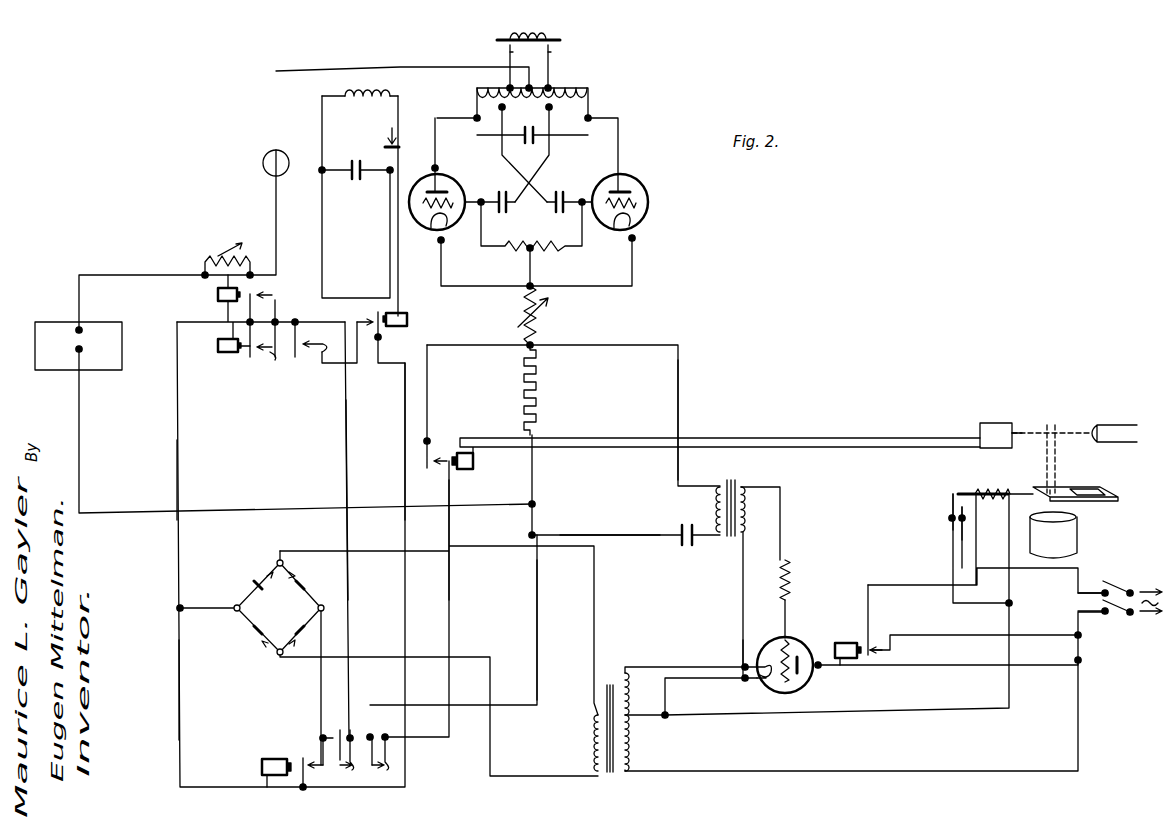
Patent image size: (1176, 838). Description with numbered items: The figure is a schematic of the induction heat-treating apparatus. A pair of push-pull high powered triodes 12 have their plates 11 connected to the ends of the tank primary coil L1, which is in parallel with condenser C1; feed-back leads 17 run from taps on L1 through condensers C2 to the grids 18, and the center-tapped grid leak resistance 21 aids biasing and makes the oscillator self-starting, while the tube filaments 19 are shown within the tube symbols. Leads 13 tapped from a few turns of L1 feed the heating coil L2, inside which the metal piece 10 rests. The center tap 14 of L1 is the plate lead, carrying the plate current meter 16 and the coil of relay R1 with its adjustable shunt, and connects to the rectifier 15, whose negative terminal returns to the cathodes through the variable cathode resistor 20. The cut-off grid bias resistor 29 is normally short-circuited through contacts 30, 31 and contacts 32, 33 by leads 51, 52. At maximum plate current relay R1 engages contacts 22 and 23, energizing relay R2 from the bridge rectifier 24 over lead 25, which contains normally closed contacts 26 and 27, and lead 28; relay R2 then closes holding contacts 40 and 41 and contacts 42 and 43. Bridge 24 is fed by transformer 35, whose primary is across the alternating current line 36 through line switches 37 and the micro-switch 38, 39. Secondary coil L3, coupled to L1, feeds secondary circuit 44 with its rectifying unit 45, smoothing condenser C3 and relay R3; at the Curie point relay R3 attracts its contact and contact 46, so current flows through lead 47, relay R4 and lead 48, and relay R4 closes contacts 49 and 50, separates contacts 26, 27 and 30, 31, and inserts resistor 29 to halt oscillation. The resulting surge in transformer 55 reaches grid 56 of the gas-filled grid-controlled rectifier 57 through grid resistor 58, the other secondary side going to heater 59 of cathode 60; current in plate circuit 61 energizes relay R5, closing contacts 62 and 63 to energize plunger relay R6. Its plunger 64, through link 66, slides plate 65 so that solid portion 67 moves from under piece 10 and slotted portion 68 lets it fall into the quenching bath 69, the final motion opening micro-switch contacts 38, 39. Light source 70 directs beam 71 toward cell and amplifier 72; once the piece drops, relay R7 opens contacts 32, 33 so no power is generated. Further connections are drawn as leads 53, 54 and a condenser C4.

The metal piece 10 is at (510, 40).
The plates 11 is at (430, 181).
The high powered triodes 12 is at (449, 189).
The leads 13 is at (508, 53).
The center tap 14 is at (401, 67).
The rectifier 15 is at (46, 322).
The plate current meter 16 is at (263, 160).
The feed-back leads 17 is at (511, 158).
The grids 18 is at (640, 206).
The tube filaments 19 is at (637, 218).
The cathode resistor 20 is at (520, 313).
The grid leak resistance 21 is at (545, 251).
The contact 22 is at (248, 305).
The contact 23 is at (277, 322).
The bridge rectifier 24 is at (280, 600).
The lead 25 is at (346, 462).
The contact 26 is at (335, 736).
The contact 27 is at (353, 758).
The lead 28 is at (182, 491).
The cut-off grid bias resistor 29 is at (540, 404).
The contact 30 is at (384, 738).
The contact 31 is at (390, 762).
The contact 32 is at (430, 440).
The contact 33 is at (447, 469).
The transformer 35 is at (612, 777).
The alternating current line 36 is at (1140, 581).
The line switches 37 is at (1118, 586).
The micro-switch contact 38 is at (950, 500).
The micro-switch contact 39 is at (964, 507).
The contact 40 is at (245, 351).
The contact 41 is at (272, 354).
The contact 42 is at (293, 355).
The contact 43 is at (313, 338).
The secondary circuit 44 is at (386, 147).
The rectifying unit 45 is at (357, 320).
The contact 46 is at (381, 339).
The lead 47 is at (403, 432).
The lead 48 is at (178, 685).
The contact 49 is at (316, 772).
The contact 50 is at (322, 755).
The lead 51 is at (452, 546).
The lead 52 is at (537, 636).
The conductor 53 is at (627, 540).
The conductor 54 is at (682, 404).
The transformer 55 is at (724, 487).
The grid 56 is at (798, 640).
The gas-filled grid-controlled rectifier 57 is at (771, 641).
The grid resistor 58 is at (788, 589).
The heater 59 is at (752, 658).
The cathode 60 is at (767, 690).
The plate circuit 61 is at (812, 673).
The contact 62 is at (871, 640).
The contact 63 is at (892, 655).
The plunger 64 is at (1018, 505).
The sliding plate 65 is at (1070, 501).
The link 66 is at (1022, 491).
The solid portion 67 is at (1058, 487).
The slotted portion 68 is at (1085, 488).
The quenching bath 69 is at (1042, 545).
The source of light 70 is at (1113, 424).
The beam 71 is at (1027, 421).
The cell and amplifier 72 is at (997, 449).
The primary coil L1 is at (546, 102).
The heating coil L2 is at (545, 28).
The secondary coil L3 is at (340, 94).
The condenser C1 is at (532, 143).
The condensers C2 is at (528, 211).
The condenser C3 is at (360, 172).
The coupling condenser C4 is at (683, 547).
The relay R1 is at (216, 294).
The relay R2 is at (216, 346).
The relay R3 is at (406, 320).
The relay R4 is at (260, 765).
The relay R5 is at (848, 643).
The plunger relay R6 is at (984, 484).
The relay R7 is at (474, 468).